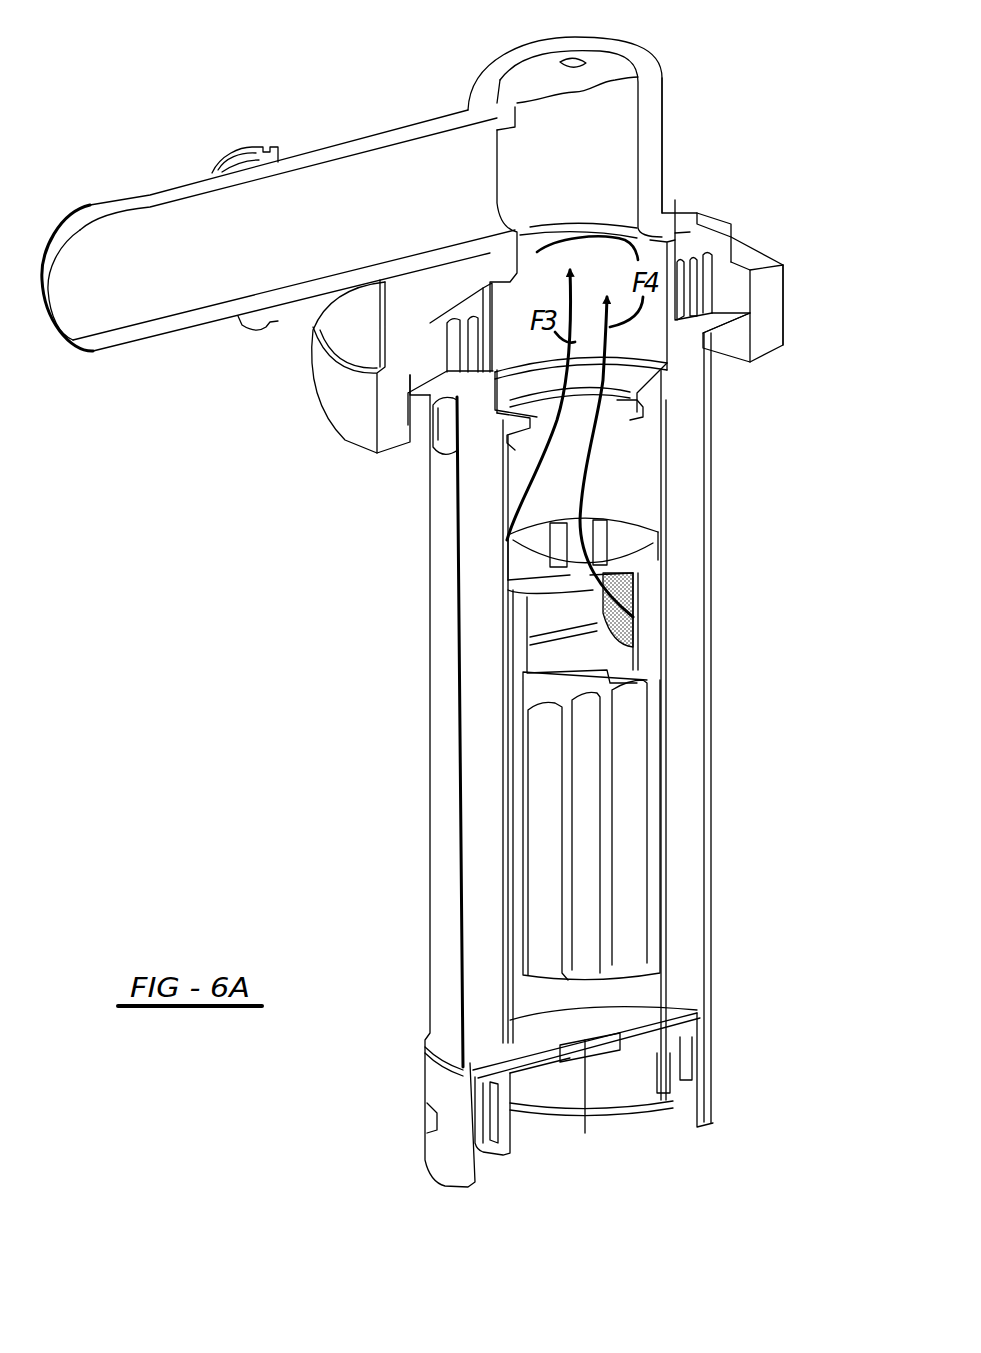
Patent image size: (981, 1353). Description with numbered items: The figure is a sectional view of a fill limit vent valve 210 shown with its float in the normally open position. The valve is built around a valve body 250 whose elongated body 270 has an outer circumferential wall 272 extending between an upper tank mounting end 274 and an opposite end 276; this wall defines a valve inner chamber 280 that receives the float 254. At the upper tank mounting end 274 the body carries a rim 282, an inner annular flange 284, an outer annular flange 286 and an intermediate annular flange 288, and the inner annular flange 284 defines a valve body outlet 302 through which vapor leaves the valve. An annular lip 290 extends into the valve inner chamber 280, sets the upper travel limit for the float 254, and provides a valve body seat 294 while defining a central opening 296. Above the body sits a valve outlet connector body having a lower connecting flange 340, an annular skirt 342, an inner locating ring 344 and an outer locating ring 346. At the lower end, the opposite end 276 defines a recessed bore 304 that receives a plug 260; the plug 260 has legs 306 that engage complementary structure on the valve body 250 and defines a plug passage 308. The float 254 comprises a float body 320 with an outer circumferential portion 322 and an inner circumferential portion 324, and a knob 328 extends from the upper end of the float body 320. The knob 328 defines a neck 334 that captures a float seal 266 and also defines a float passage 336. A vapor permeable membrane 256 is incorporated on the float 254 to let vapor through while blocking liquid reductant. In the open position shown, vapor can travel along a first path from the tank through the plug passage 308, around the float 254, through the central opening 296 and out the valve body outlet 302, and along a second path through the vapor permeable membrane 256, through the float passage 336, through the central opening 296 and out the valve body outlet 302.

The fill limit vent valve 210 is at (775, 72).
The valve body outlet 302 is at (537, 250).
The inner annular flange 284 is at (633, 260).
The intermediate annular flange 288 is at (690, 277).
The outer annular flange 286 is at (703, 283).
The upper tank mounting end 274 is at (738, 375).
The central opening 296 is at (607, 402).
The valve inner chamber 280 is at (630, 440).
The inner locating ring 344 is at (477, 335).
The outer locating ring 346 is at (463, 347).
The rim 282 is at (410, 377).
The lower connecting flange 340 is at (437, 368).
The annular skirt 342 is at (358, 427).
The annular lip 290 is at (503, 413).
The valve body seat 294 is at (517, 445).
The valve body 250 is at (483, 617).
The elongated body 270 is at (480, 743).
The outer circumferential wall 272 is at (442, 842).
The float 254 is at (653, 800).
The float body 320 is at (653, 698).
The outer circumferential portion 322 is at (653, 740).
The inner circumferential portion 324 is at (607, 855).
The knob 328 is at (557, 523).
The float passage 336 is at (615, 518).
The float seal 266 is at (620, 532).
The neck 334 is at (590, 568).
The vapor permeable membrane 256 is at (633, 597).
The opposite end 276 is at (745, 1037).
The recessed bore 304 is at (497, 1128).
The legs 306 is at (690, 1057).
The plug passage 308 is at (590, 1035).
The plug 260 is at (628, 1040).